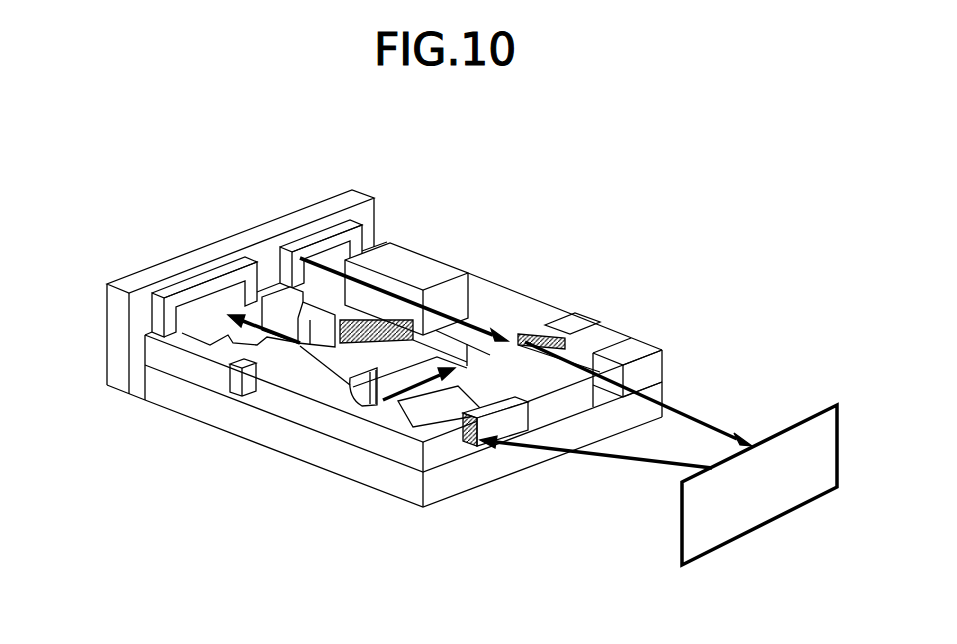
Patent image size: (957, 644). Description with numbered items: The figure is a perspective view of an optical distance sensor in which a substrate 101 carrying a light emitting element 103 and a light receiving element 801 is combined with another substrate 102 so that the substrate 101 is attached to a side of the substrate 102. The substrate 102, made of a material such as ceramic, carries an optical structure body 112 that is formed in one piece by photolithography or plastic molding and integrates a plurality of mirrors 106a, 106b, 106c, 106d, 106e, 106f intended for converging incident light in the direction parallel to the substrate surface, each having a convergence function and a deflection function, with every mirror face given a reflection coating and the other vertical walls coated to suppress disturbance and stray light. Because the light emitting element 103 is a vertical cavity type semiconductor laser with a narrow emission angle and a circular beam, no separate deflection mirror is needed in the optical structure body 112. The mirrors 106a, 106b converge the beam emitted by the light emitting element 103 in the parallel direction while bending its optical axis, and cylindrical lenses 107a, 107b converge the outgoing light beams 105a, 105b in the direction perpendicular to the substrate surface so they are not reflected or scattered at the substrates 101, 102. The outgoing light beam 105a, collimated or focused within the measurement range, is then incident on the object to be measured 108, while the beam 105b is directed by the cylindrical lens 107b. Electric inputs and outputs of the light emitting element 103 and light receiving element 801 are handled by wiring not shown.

The substrate 101 is at (118, 354).
The substrate 102 is at (392, 480).
The light emitting element 103 is at (328, 247).
The outgoing light beam 105a is at (695, 410).
The outgoing light beam 105b is at (618, 456).
The mirror 106a is at (530, 338).
The mirror 106b is at (565, 314).
The mirror 106c is at (360, 402).
The mirror 106d is at (482, 308).
The mirror 106e is at (390, 312).
The mirror 106f is at (262, 349).
The cylindrical lens 107a is at (593, 353).
The cylindrical lens 107b is at (446, 418).
The object to be measured 108 is at (747, 525).
The optical structure body 112 is at (343, 430).
The light receiving element 801 is at (200, 290).